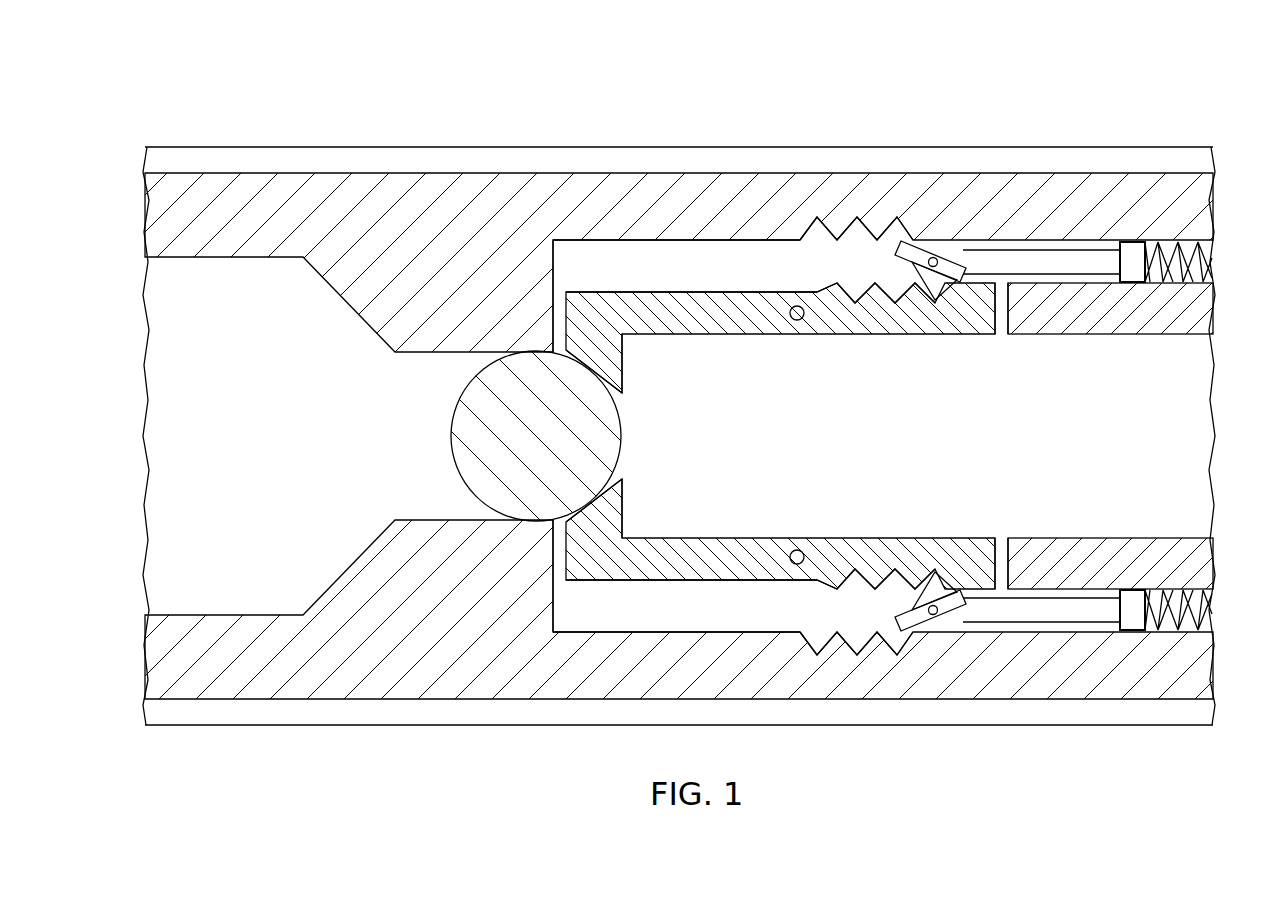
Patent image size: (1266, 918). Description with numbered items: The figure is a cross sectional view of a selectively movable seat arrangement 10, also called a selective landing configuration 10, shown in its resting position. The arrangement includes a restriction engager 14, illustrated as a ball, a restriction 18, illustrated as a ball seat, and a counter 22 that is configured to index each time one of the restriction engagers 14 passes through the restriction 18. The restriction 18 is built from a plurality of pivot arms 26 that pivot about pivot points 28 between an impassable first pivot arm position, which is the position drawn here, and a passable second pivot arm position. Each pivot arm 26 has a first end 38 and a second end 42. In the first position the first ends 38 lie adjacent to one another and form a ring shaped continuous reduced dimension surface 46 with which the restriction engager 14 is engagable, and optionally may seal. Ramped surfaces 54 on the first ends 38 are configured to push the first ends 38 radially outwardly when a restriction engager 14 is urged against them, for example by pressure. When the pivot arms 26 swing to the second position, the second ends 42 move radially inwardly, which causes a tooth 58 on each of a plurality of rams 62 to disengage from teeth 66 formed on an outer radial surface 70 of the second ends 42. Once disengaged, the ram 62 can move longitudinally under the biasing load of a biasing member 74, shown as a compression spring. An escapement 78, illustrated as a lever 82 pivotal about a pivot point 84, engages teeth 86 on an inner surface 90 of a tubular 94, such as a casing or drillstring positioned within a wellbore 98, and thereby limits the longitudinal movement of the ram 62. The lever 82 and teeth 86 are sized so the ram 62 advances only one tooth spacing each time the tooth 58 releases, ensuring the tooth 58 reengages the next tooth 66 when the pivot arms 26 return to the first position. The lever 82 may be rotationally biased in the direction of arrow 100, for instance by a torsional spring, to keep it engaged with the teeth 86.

The selectively movable seat arrangement 10 is at (1108, 75).
The restriction engager 14 is at (452, 437).
The restriction 18 is at (680, 295).
The counter 22 is at (956, 214).
The pivot arms 26 is at (700, 574).
The pivot points 28 is at (797, 321).
The first end 38 is at (573, 258).
The second end 42 is at (994, 348).
The reduced dimension surface 46 is at (603, 488).
The ramped surfaces 54 is at (610, 385).
The tooth 58 is at (940, 300).
The rams 62 is at (1100, 285).
The teeth 66 is at (887, 292).
The outer radial surface 70 is at (720, 293).
The biasing member 74 is at (1214, 262).
The escapement 78 is at (968, 246).
The lever 82 is at (912, 240).
The pivot point 84 is at (940, 262).
The teeth 86 is at (812, 240).
The inner surface 90 is at (638, 248).
The tubular 94 is at (220, 183).
The wellbore 98 is at (297, 157).
The arrow 100 is at (892, 236).